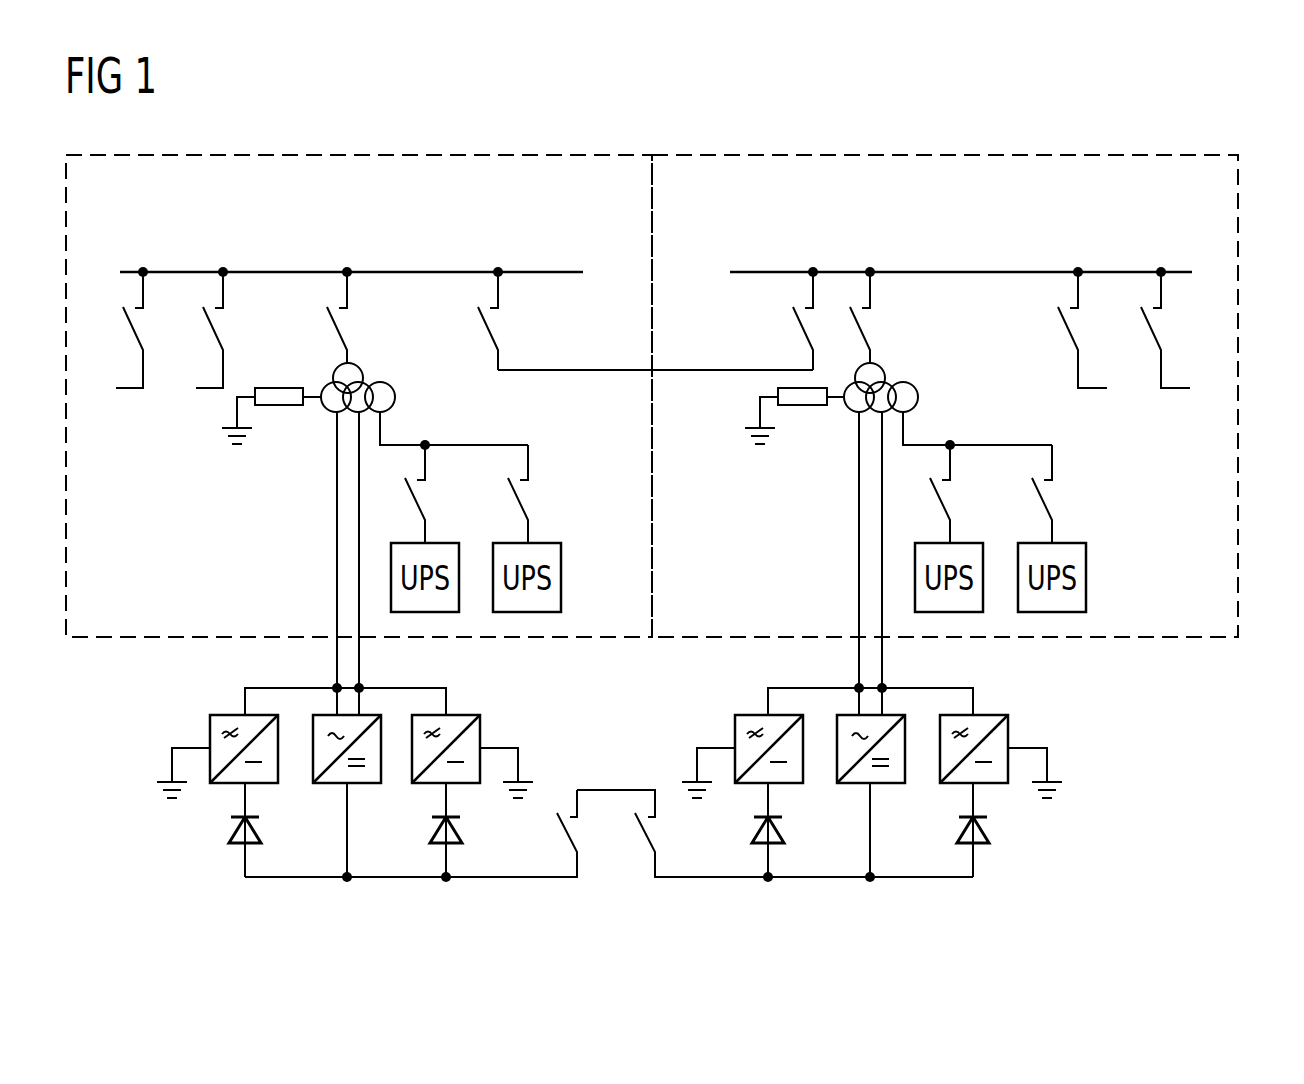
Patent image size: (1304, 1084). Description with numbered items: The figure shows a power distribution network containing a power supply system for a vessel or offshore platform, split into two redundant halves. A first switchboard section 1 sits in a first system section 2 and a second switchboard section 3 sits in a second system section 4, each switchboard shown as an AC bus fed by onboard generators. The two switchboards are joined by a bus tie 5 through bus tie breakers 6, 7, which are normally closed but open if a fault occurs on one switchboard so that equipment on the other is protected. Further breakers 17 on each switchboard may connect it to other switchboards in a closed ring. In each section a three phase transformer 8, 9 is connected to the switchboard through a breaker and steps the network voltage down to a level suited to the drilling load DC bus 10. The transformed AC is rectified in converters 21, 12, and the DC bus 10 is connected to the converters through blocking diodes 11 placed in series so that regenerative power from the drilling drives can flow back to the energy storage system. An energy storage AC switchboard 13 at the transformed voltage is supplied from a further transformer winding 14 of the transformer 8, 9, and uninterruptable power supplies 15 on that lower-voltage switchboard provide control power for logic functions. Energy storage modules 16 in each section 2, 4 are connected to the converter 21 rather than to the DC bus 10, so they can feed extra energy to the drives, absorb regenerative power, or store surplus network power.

The first switchboard section 1 is at (383, 272).
The first system section 2 is at (343, 155).
The second switchboard section 3 is at (990, 272).
The second system section 4 is at (943, 155).
The bus tie 5 is at (697, 370).
The bus tie breaker 6 is at (490, 330).
The bus tie breaker 7 is at (800, 330).
The three phase transformer 8 is at (306, 437).
The three phase transformer 9 is at (831, 437).
The DC bus 10 is at (510, 877).
The diode 11 is at (253, 826).
The converter 12 is at (362, 785).
The energy storage AC switchboard 13 is at (475, 445).
The further transformer winding 14 is at (390, 364).
The uninterruptable power supply 15 is at (562, 577).
The energy storage module 16 is at (165, 780).
The breaker 17 is at (131, 330).
The converter 21 is at (227, 712).